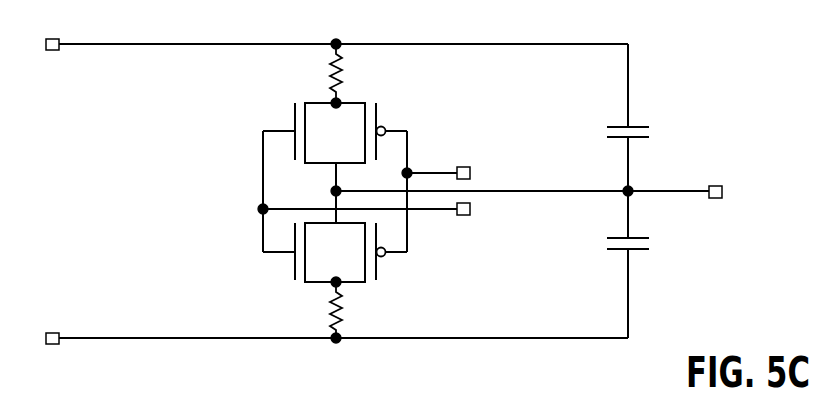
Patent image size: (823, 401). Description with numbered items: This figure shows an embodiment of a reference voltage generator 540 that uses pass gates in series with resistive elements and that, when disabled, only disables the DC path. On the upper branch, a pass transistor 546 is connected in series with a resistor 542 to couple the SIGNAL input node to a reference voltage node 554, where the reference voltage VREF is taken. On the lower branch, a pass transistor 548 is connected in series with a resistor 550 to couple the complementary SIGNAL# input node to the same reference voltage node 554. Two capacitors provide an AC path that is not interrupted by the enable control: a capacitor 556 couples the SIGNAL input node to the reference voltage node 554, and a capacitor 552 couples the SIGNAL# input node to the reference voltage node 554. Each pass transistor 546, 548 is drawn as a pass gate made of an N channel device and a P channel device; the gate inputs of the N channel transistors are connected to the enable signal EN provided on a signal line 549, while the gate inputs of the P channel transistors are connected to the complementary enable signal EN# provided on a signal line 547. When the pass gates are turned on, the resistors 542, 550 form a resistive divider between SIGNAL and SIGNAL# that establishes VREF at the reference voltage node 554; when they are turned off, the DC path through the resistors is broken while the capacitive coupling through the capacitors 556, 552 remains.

The reference voltage generator 540 is at (212, 210).
The resistor 542 is at (348, 72).
The pass transistor 546 is at (352, 167).
The signal line 547 is at (536, 164).
The pass transistor 548 is at (352, 284).
The signal line 549 is at (509, 214).
The resistor 550 is at (348, 312).
The capacitor 552 is at (655, 247).
The reference voltage node 554 is at (800, 180).
The capacitor 556 is at (655, 135).